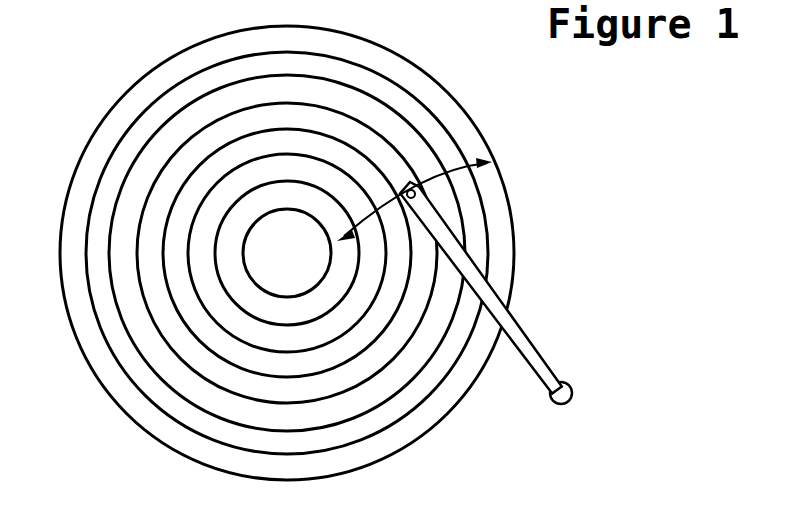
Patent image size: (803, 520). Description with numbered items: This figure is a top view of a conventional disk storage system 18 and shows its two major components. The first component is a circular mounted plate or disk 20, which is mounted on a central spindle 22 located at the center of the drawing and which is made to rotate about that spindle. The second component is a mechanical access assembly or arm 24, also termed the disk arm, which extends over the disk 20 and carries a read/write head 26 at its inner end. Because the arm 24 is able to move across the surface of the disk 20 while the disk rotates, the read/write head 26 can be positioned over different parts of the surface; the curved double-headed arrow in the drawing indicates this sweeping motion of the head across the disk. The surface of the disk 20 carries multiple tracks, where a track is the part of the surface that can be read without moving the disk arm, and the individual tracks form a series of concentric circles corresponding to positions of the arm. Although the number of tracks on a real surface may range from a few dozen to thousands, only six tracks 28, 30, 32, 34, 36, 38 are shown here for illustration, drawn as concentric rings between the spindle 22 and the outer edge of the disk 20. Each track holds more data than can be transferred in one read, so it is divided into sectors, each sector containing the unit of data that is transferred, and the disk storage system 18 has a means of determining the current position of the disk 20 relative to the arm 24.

The conventional disk storage system 18 is at (118, 77).
The disk 20 is at (433, 71).
The central spindle 22 is at (287, 253).
The mechanical access assembly or arm 24 is at (551, 368).
The read/write head 26 is at (408, 182).
The track 28 is at (297, 324).
The track 30 is at (290, 352).
The track 32 is at (270, 377).
The track 34 is at (300, 403).
The track 36 is at (269, 430).
The track 38 is at (334, 450).